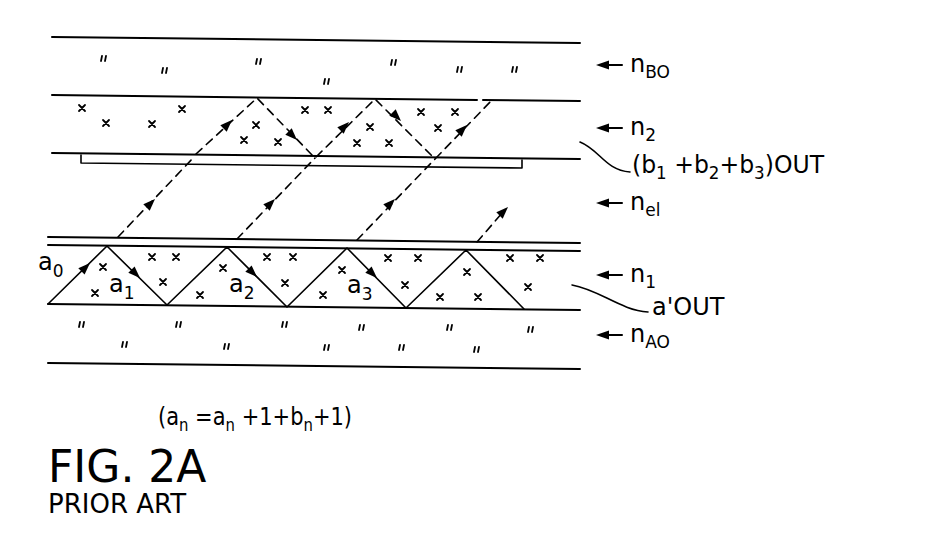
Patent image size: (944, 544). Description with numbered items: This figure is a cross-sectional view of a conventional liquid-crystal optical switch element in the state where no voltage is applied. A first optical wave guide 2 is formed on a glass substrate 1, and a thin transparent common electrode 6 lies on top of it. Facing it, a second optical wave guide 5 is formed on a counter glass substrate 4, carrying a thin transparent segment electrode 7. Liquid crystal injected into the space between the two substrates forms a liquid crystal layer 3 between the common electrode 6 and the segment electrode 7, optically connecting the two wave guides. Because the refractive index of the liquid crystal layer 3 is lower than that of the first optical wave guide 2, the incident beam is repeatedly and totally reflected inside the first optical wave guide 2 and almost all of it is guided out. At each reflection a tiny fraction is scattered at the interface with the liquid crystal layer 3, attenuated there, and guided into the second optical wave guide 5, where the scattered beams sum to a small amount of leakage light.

The glass substrate 1 is at (490, 353).
The first optical wave guide 2 is at (545, 297).
The liquid crystal layer 3 is at (341, 199).
The counter glass substrate 4 is at (219, 48).
The second optical wave guide 5 is at (140, 105).
The common electrode 6 is at (57, 238).
The segment electrode 7 is at (82, 156).